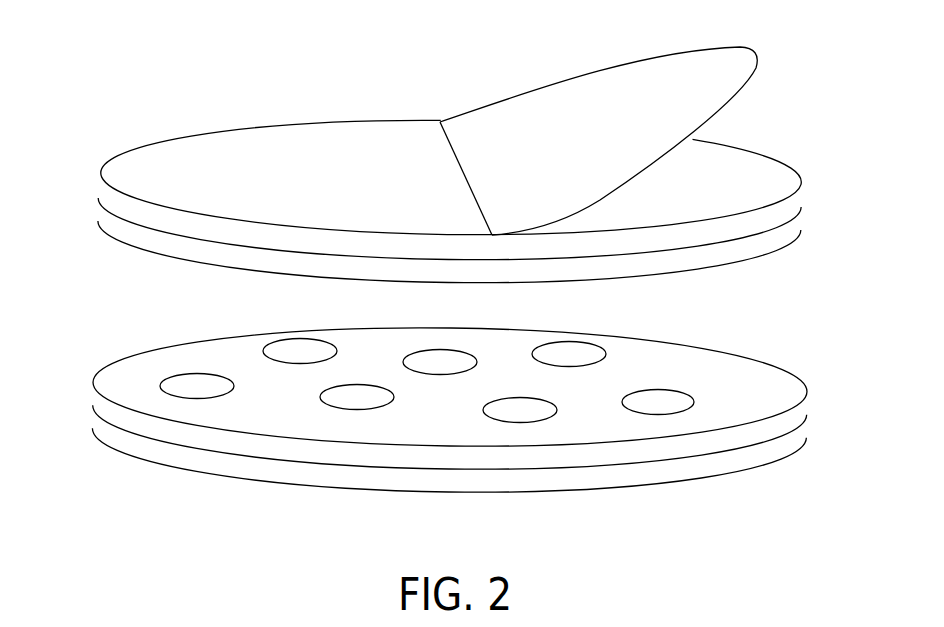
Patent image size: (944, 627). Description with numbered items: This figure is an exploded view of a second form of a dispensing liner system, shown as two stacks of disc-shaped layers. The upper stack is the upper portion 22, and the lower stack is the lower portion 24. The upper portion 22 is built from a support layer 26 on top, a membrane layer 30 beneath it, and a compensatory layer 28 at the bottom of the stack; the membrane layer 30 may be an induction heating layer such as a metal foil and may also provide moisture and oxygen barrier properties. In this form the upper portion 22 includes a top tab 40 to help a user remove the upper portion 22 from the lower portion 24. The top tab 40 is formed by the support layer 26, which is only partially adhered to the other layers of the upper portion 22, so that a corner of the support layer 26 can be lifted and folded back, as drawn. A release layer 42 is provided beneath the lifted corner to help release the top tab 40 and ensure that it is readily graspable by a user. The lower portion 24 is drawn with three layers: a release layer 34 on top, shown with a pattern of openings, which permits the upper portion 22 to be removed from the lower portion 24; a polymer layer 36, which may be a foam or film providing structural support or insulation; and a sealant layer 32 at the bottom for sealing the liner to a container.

The upper portion 22 is at (97, 147).
The lower portion 24 is at (92, 360).
The support layer 26 is at (320, 157).
The compensatory layer 28 is at (798, 230).
The membrane layer 30 is at (800, 203).
The sealant layer 32 is at (802, 443).
The release layer 34 is at (808, 390).
The polymer layer 36 is at (807, 415).
The top tab 40 is at (572, 58).
The release layer 42 is at (750, 180).